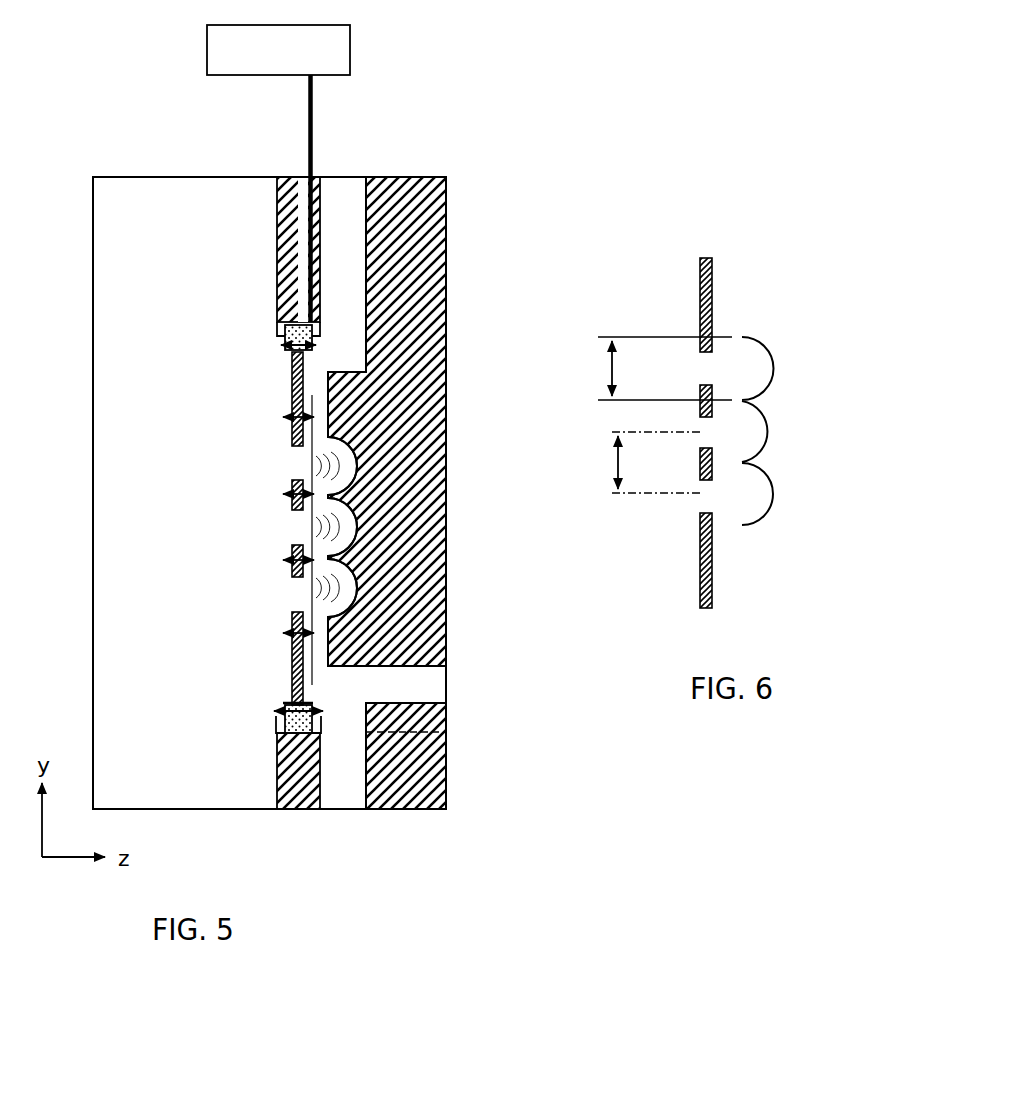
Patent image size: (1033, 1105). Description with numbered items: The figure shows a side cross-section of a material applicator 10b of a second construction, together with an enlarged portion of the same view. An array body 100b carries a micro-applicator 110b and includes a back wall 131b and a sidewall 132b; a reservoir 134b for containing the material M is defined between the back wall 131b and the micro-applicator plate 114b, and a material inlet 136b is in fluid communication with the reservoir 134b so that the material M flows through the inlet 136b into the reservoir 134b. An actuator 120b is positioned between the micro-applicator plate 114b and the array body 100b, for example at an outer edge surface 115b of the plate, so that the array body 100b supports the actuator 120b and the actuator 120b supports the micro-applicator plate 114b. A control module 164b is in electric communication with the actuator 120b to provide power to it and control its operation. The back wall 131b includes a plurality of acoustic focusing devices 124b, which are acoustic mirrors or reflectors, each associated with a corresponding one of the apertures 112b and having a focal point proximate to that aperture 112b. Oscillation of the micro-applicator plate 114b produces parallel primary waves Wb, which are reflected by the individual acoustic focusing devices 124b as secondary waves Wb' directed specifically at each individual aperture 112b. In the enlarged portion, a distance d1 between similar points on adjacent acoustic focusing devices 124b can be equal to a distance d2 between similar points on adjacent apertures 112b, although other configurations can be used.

In FIG. 5, the material applicator 10b is at (232, 190).
In FIG. 5, the array body 100b is at (300, 176).
In FIG. 5, the micro-applicator 110b is at (268, 735).
In FIG. 5, the apertures 112b is at (294, 481).
In FIG. 6, the apertures 112b is at (702, 386).
In FIG. 5, the micro-applicator plate 114b is at (290, 362).
In FIG. 6, the micro-applicator plate 114b is at (697, 305).
In FIG. 5, the outer edge surface 115b is at (292, 703).
In FIG. 5, the actuator 120b is at (277, 778).
In FIG. 5, the acoustic focusing devices 124b is at (378, 420).
In FIG. 6, the acoustic focusing devices 124b is at (762, 342).
In FIG. 5, the back wall 131b is at (292, 383).
In FIG. 5, the sidewall 132b is at (366, 228).
In FIG. 5, the reservoir 134b is at (380, 630).
In FIG. 5, the material inlet 136b is at (420, 683).
In FIG. 5, the control module 164b is at (207, 53).
In FIG. 5, the primary waves Wb is at (429, 352).
In FIG. 5, the secondary waves Wb' is at (443, 444).
In FIG. 5, the material M is at (333, 685).
In FIG. 6, the distance between adjacent acoustic focusing devices d1 is at (656, 368).
In FIG. 6, the distance between adjacent apertures d2 is at (644, 462).